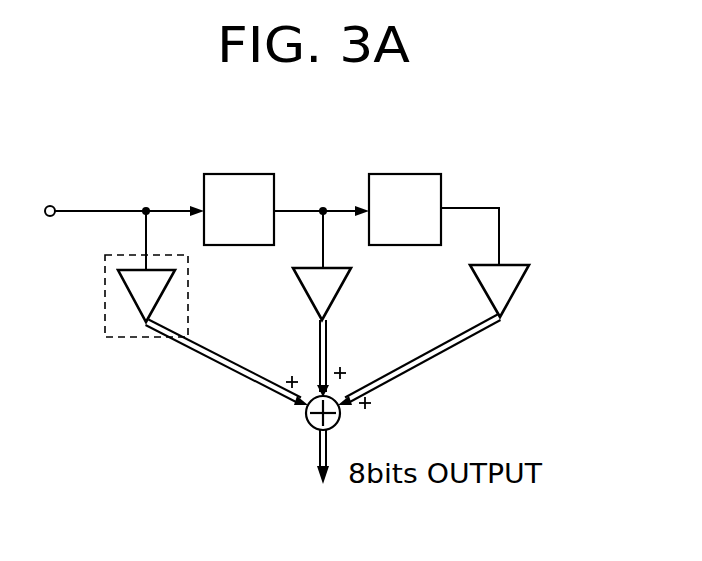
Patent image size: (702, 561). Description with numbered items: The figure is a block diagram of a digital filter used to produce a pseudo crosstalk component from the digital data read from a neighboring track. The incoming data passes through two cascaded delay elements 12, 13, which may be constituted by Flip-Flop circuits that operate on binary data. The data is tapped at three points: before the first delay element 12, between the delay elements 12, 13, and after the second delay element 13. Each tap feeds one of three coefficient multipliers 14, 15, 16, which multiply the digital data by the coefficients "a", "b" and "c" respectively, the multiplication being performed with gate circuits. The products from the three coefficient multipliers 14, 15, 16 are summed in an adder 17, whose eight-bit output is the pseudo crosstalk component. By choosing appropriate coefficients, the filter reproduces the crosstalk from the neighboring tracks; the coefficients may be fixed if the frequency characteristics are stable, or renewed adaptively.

The delay element 12 is at (250, 174).
The delay element 13 is at (427, 174).
The coefficient multiplier 14 is at (166, 288).
The coefficient multiplier 15 is at (344, 283).
The coefficient multiplier 16 is at (524, 280).
The adder 17 is at (340, 420).